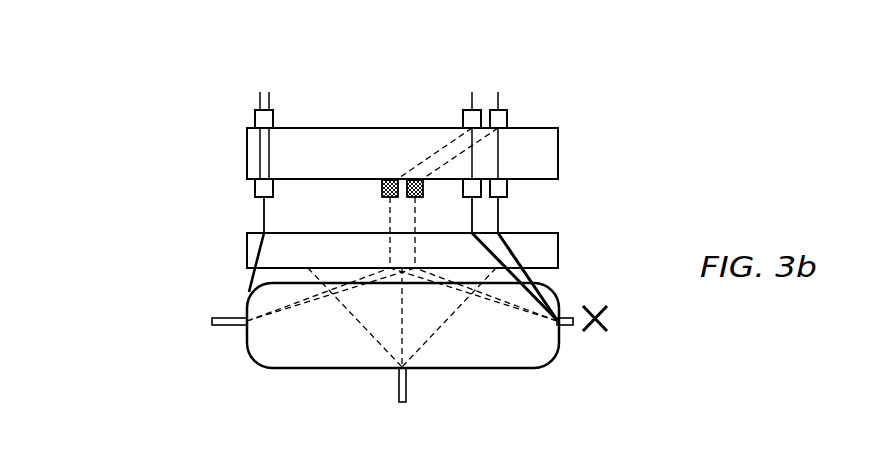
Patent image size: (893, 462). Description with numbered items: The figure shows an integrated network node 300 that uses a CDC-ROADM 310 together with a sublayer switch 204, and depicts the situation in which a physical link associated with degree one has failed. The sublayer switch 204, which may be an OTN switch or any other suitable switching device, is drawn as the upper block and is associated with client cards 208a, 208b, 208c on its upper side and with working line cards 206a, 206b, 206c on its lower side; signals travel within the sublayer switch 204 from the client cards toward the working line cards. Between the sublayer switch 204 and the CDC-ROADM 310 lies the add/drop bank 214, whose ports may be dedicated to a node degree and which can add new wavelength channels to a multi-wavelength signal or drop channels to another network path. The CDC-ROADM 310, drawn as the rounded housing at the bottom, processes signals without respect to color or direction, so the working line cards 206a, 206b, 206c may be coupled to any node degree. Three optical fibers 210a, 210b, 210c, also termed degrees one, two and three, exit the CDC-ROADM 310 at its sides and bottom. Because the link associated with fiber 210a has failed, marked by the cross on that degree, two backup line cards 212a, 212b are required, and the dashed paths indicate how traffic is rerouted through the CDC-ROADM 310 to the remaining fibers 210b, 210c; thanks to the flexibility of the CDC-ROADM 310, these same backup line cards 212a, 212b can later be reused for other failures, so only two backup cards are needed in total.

The integrated network node 300 is at (124, 136).
The sublayer switch 204 is at (353, 164).
The client card 208a is at (255, 115).
The client card 208b is at (463, 120).
The client card 208c is at (505, 112).
The working line card 206a is at (273, 186).
The working line card 206b is at (463, 188).
The working line card 206c is at (507, 190).
The backup line card 212a is at (384, 180).
The backup line card 212b is at (415, 198).
The add/drop bank 214 is at (552, 261).
The CDC-ROADM 310 is at (500, 355).
The optical fiber 210a is at (570, 313).
The optical fiber 210b is at (399, 372).
The optical fiber 210c is at (220, 316).